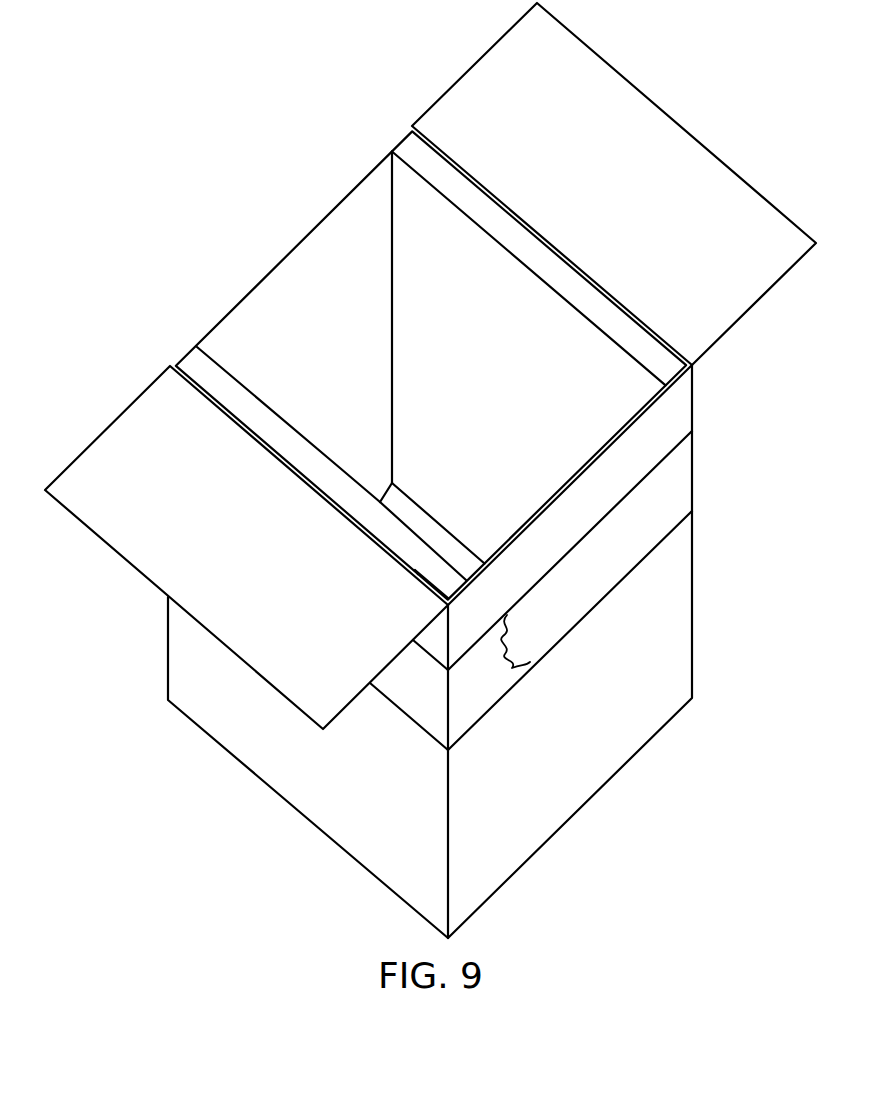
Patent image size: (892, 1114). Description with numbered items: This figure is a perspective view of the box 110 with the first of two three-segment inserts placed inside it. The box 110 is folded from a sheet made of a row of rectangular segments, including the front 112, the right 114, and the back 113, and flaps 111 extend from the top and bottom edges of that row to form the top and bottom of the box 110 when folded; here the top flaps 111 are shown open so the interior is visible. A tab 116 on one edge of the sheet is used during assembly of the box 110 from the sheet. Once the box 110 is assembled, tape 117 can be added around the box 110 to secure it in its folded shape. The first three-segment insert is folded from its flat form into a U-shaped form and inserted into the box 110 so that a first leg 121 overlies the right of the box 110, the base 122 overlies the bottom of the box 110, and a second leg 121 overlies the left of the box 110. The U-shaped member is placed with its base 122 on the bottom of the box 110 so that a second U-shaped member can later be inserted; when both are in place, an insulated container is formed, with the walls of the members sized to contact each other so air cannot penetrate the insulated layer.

The box 110 is at (160, 630).
The flaps 111 is at (642, 203).
The front 112 is at (602, 728).
The back 113 is at (323, 362).
The right 114 is at (340, 767).
The tab 116 is at (417, 585).
The tape 117 is at (628, 568).
The leg 121 is at (527, 413).
The base 122 is at (380, 502).